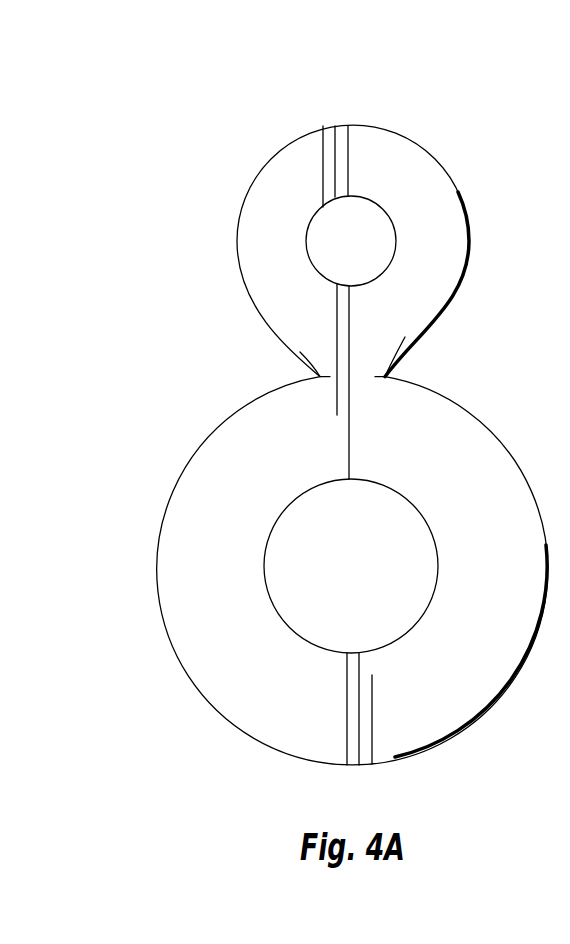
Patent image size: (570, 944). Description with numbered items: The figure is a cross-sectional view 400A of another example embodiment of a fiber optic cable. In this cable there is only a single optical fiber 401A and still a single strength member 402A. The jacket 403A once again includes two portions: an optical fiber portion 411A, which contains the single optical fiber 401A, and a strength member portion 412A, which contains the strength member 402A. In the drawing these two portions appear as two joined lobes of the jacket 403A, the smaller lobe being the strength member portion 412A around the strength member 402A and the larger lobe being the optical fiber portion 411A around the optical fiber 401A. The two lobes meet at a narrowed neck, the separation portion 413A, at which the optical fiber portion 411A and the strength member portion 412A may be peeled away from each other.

The cross-sectional view 400A is at (376, 62).
The optical fiber 401A is at (368, 586).
The strength member 402A is at (365, 245).
The jacket 403A is at (398, 322).
The optical fiber portion 411A is at (235, 448).
The strength member portion 412A is at (269, 244).
The separation portion 413A is at (363, 378).